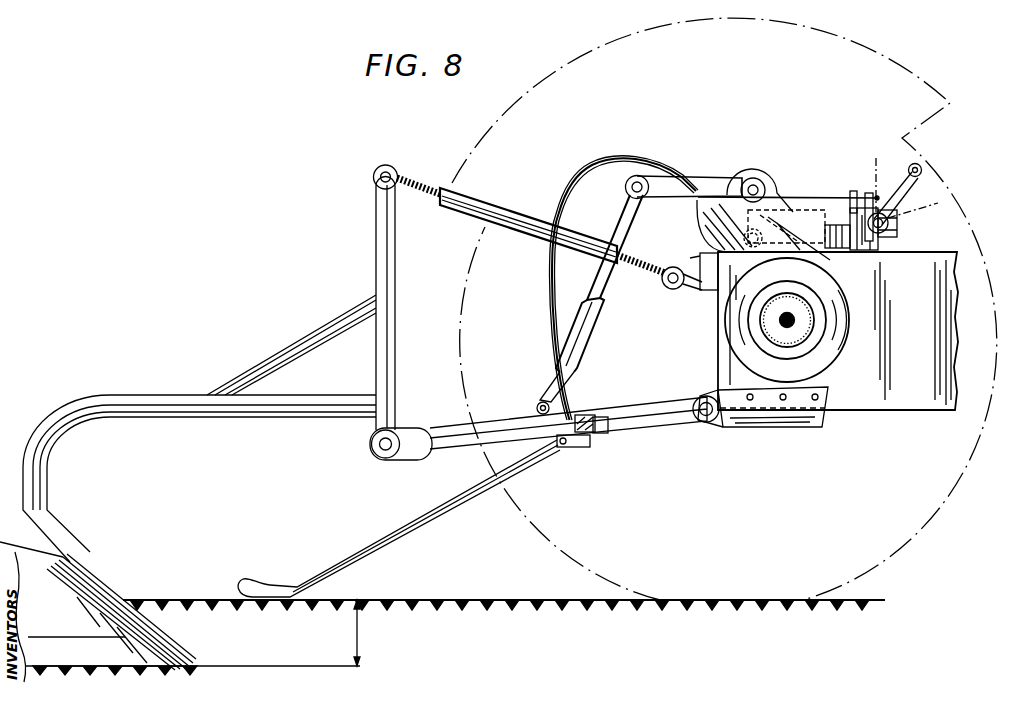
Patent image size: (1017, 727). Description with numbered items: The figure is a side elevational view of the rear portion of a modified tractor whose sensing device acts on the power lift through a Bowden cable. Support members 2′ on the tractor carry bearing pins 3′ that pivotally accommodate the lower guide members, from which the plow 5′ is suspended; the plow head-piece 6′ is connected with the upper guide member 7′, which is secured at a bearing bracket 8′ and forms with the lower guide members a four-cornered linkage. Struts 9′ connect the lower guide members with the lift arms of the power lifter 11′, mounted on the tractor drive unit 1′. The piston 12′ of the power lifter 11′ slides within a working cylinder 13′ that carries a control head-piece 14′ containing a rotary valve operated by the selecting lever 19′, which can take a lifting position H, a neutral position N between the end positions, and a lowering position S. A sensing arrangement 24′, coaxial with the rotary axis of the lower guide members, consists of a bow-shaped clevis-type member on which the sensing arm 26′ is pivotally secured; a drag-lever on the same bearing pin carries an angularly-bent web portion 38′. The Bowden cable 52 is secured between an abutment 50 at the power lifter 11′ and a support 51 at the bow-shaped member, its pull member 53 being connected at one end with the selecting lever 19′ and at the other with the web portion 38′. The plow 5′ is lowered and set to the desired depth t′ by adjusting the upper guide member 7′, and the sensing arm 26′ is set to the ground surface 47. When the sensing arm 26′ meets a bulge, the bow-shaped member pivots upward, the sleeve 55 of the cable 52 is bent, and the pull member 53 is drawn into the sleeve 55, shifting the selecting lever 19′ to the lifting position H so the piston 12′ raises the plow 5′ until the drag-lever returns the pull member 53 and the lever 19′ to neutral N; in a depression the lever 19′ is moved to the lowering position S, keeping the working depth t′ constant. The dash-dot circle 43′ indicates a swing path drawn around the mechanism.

The tractor drive unit 1′ is at (903, 400).
The support members 2′ is at (795, 427).
The bearing pins 3′ is at (700, 420).
The plow 5′ is at (100, 590).
The plow head-piece 6′ is at (395, 318).
The upper guide member 7′ is at (513, 228).
The bearing lug or bracket 8′ is at (686, 290).
The struts 9′ is at (601, 293).
The power lifter 11′ is at (710, 230).
The piston 12′ is at (828, 258).
The working cylinder 13′ is at (783, 207).
The control head-piece 14′ is at (897, 227).
The selecting lever 19′ is at (925, 160).
The sensing arrangement 24′ is at (575, 415).
The sensing arm 26′ is at (445, 517).
The angularly-bent web portion 38′ is at (577, 447).
The swing path 43′ is at (905, 538).
The ground 47 is at (497, 599).
The abutment 50 is at (852, 193).
The support 51 is at (543, 423).
The pull cable or Bowden cable 52 is at (583, 173).
The pull member 53 is at (867, 197).
The sleeve 55 is at (550, 307).
The lifting position H is at (875, 175).
The neutral position N is at (912, 162).
The lowering position S is at (920, 205).
The working depth t′ is at (367, 633).